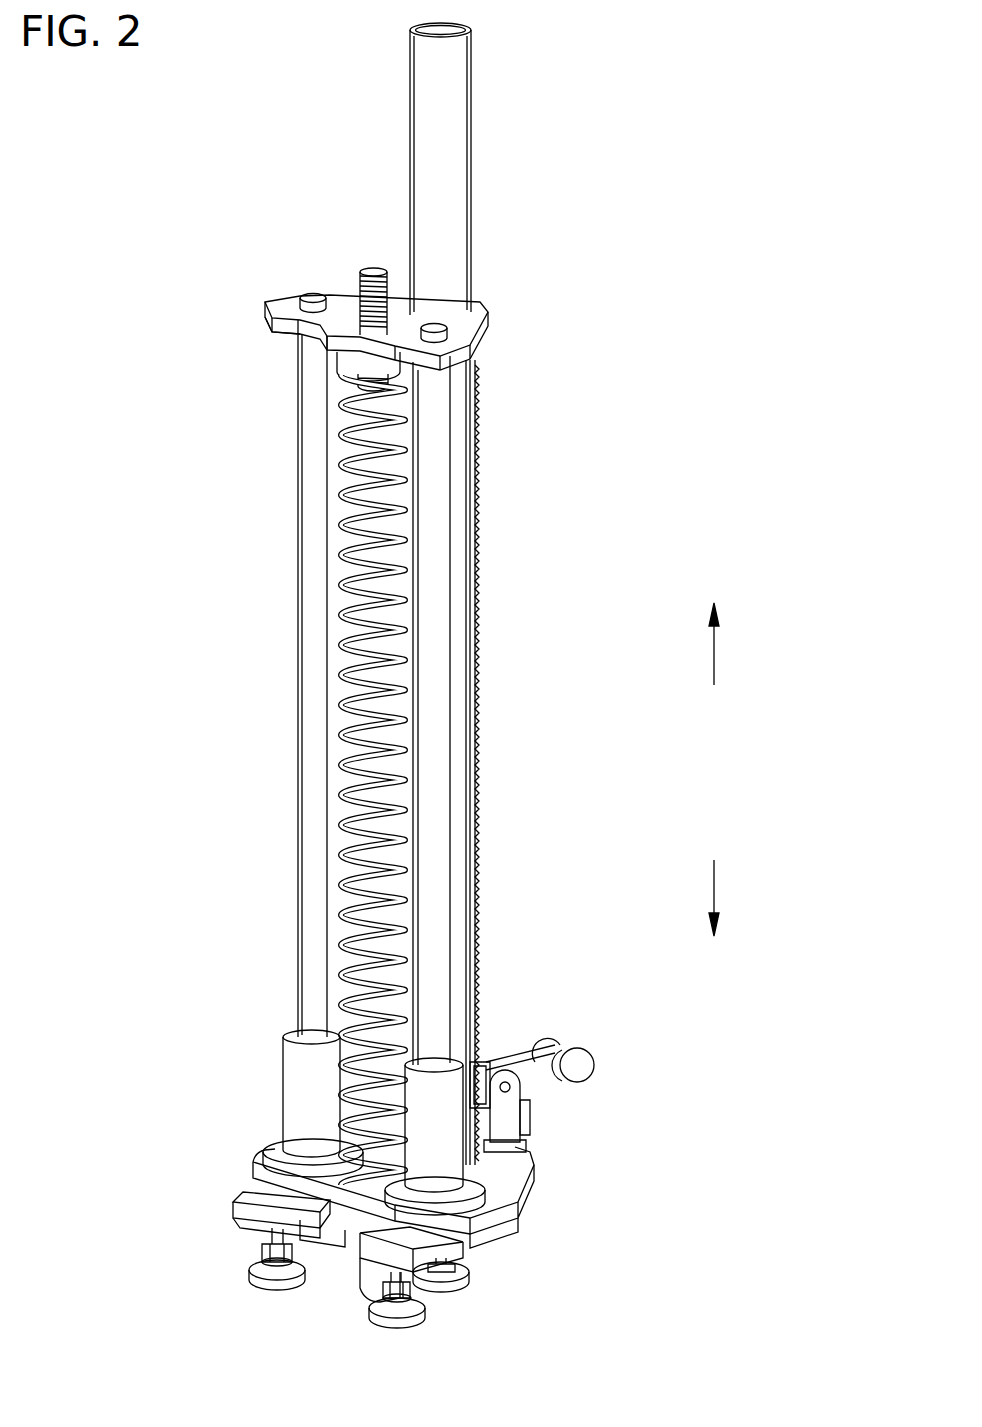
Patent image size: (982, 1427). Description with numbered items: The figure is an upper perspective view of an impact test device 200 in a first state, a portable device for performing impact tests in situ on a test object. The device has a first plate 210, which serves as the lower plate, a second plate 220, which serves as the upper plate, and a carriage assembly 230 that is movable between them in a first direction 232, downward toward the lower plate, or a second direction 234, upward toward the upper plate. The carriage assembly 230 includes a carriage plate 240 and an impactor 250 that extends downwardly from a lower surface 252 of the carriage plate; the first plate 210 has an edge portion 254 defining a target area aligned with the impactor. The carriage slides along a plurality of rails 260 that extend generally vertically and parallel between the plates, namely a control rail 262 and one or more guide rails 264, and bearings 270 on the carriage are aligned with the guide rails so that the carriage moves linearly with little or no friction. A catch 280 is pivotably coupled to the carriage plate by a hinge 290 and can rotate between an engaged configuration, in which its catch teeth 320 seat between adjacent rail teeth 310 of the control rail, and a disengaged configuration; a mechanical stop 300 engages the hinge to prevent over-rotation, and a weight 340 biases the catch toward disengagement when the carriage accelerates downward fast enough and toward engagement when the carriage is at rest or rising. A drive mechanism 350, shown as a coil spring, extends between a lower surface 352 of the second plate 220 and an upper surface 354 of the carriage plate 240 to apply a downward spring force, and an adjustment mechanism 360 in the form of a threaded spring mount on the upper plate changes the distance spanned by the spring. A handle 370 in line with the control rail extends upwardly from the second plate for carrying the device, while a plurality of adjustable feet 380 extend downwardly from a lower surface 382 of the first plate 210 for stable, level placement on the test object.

The impact test device 200 is at (596, 1313).
The first plate 210 is at (234, 1205).
The second plate 220 is at (265, 314).
The carriage assembly 230 is at (186, 1145).
The first direction 232 is at (745, 898).
The second direction 234 is at (745, 644).
The carriage plate 240 is at (508, 1196).
The impactor 250 is at (364, 1272).
The surface 252 is at (497, 1228).
The edge portion 254 is at (306, 1233).
The rails 260 is at (218, 643).
The control rail 262 is at (463, 442).
The guide rails 264 is at (311, 507).
The bearings 270 is at (294, 1058).
The catch 280 is at (573, 1021).
The hinge 290 is at (521, 1140).
The stop 300 is at (531, 1116).
The rail teeth 310 is at (480, 516).
The catch teeth 320 is at (481, 1066).
The weight 340 is at (586, 1066).
The drive mechanism 350 is at (340, 717).
The surface 352 is at (279, 326).
The surface 354 is at (257, 1157).
The adjustment mechanism 360 is at (338, 364).
The handle 370 is at (458, 120).
The feet 380 is at (262, 1283).
The surface 382 is at (232, 1231).